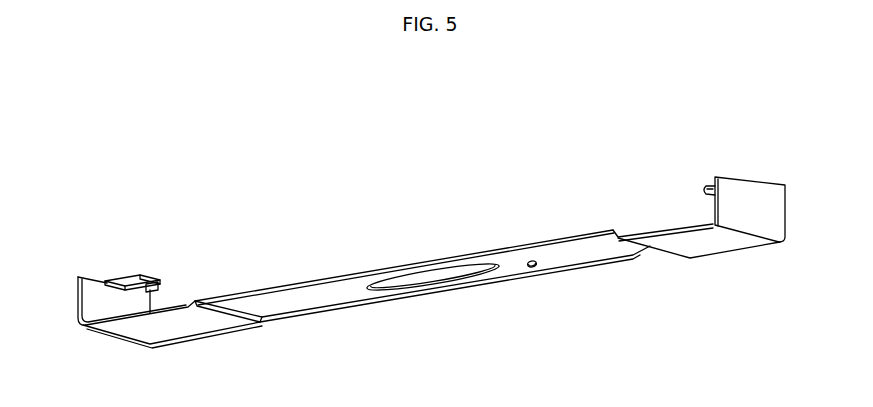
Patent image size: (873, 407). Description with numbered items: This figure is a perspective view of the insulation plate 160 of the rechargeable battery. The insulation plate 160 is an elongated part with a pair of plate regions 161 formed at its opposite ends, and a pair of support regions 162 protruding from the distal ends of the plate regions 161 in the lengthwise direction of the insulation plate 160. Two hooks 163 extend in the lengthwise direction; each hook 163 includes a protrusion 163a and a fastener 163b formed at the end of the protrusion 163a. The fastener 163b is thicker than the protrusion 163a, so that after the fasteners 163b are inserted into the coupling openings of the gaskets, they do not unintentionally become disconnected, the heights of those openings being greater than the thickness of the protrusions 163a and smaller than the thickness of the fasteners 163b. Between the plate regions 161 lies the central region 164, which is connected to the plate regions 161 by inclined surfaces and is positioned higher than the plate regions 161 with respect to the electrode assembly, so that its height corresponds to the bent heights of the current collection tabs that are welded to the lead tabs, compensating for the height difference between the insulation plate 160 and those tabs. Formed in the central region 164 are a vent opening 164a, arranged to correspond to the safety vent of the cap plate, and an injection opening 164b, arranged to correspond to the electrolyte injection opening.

The insulation plate 160 is at (780, 116).
The plate regions 161 is at (188, 333).
The support regions 162 is at (90, 302).
The hooks 163 is at (204, 217).
The protrusion 163a is at (117, 277).
The fastener 163b is at (160, 291).
The central region 164 is at (315, 303).
The vent opening 164a is at (429, 288).
The injection opening 164b is at (535, 268).